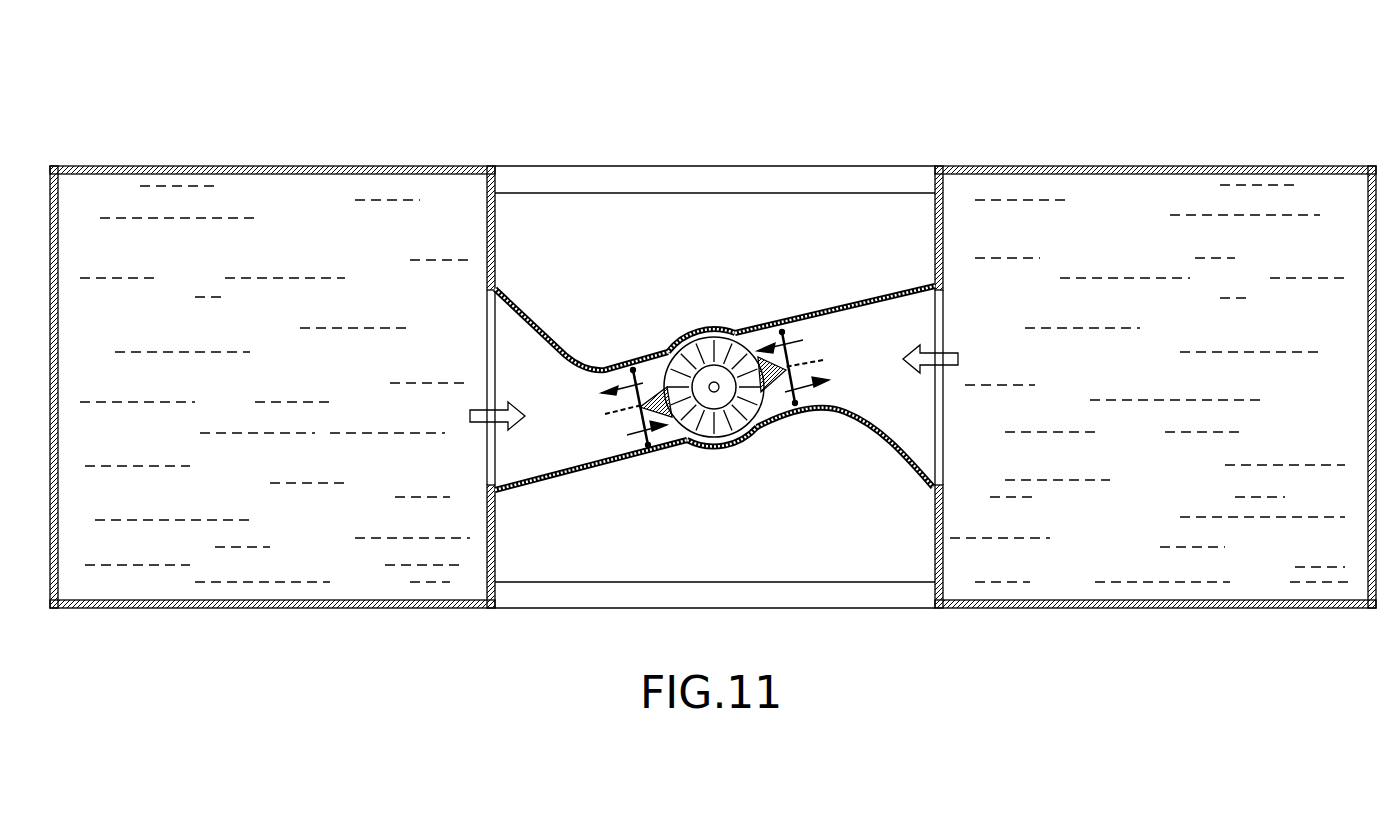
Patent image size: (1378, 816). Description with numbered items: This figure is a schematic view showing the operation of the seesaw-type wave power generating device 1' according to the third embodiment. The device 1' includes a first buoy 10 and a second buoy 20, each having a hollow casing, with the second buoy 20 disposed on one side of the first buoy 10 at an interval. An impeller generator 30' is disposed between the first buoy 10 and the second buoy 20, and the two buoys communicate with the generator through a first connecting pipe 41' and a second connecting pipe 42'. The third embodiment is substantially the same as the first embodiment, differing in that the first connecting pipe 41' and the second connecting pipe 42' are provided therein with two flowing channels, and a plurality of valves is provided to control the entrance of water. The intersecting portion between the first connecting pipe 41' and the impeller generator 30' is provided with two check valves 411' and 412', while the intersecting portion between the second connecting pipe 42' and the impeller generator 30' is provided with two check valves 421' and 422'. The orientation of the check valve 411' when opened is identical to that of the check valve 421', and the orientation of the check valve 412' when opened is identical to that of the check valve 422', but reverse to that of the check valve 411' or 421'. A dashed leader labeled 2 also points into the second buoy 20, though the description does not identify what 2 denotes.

The seesaw-type wave power generating device 1' is at (714, 315).
The insulation material 2 is at (1168, 192).
The first buoy 10 is at (190, 166).
The second buoy 20 is at (1240, 166).
The impeller generator 30' is at (714, 329).
The first connecting pipe 41' is at (591, 425).
The second connecting pipe 42' is at (835, 270).
The check valve 411' is at (642, 450).
The check valve 412' is at (618, 358).
The check valve 421' is at (845, 448).
The check valve 422' is at (793, 319).